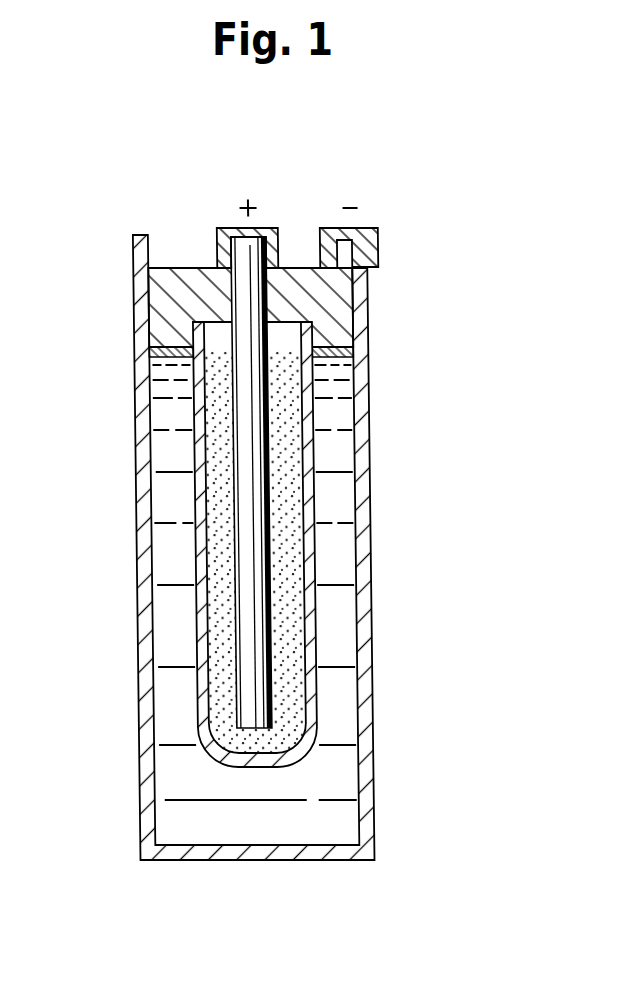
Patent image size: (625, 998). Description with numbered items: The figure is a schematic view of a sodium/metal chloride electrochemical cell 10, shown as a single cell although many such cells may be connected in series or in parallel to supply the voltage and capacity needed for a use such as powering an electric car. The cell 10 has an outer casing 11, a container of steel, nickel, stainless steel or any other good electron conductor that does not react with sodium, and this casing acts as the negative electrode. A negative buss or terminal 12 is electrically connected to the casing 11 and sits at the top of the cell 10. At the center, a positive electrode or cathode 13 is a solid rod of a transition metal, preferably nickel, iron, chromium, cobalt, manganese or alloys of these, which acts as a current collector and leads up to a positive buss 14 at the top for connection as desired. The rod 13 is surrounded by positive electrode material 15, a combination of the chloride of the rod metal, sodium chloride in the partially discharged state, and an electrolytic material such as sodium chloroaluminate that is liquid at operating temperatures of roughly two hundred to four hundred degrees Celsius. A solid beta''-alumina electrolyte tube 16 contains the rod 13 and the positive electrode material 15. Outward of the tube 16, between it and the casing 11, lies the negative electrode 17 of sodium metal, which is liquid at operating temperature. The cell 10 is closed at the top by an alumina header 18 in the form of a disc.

The electrochemical cell 10 is at (90, 364).
The outer casing 11 is at (130, 580).
The negative terminal 12 is at (372, 228).
The positive electrode 13 is at (246, 444).
The positive buss 14 is at (216, 238).
The positive electrode material 15 is at (283, 420).
The beta'' alumina electrolyte solid tube 16 is at (303, 632).
The negative electrode 17 is at (176, 759).
The alumina header 18 is at (362, 285).